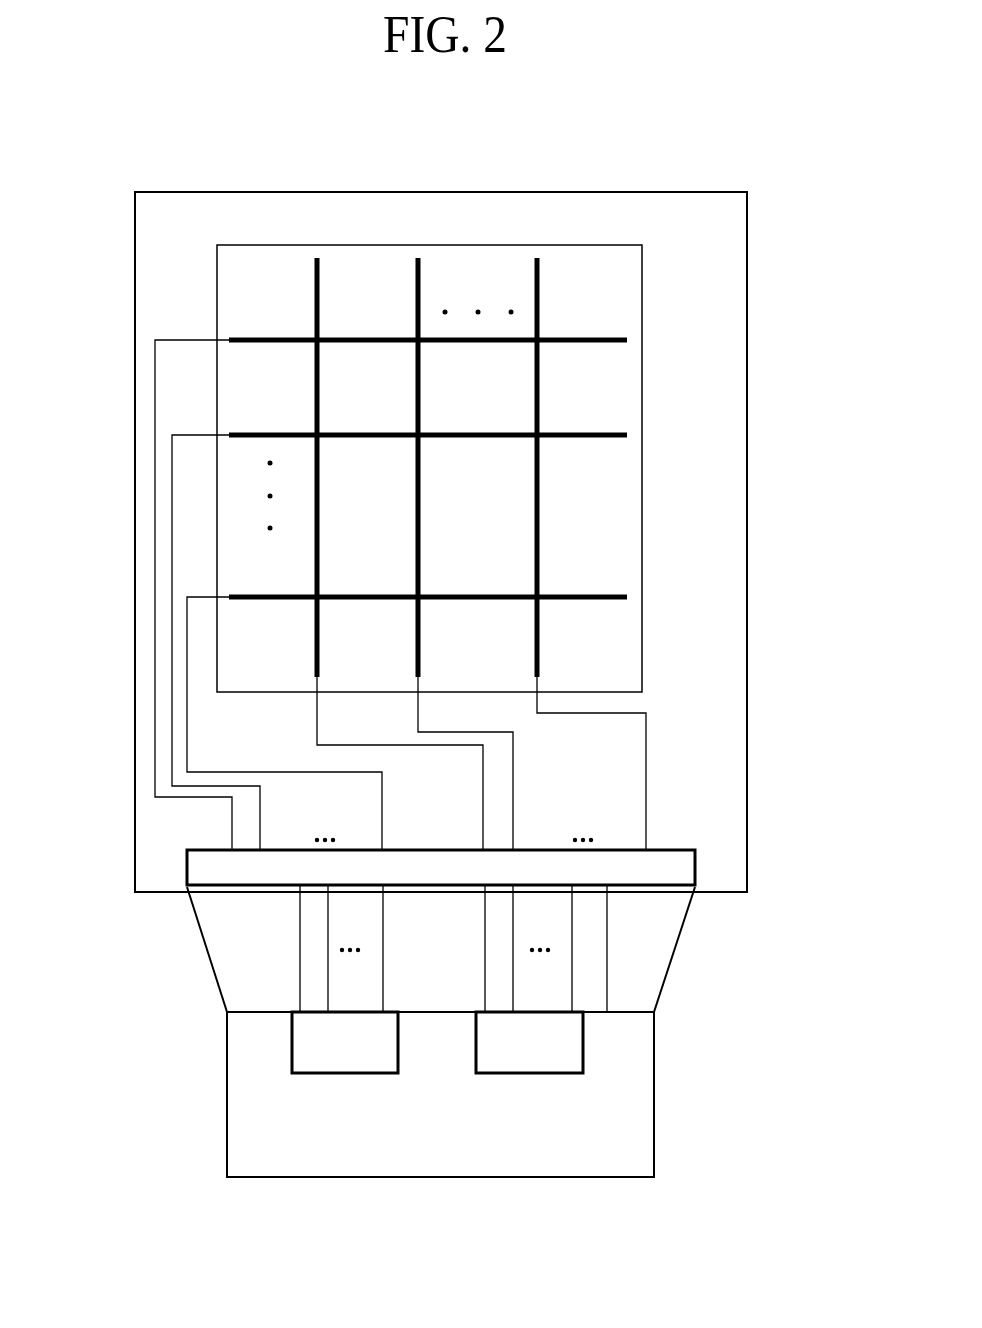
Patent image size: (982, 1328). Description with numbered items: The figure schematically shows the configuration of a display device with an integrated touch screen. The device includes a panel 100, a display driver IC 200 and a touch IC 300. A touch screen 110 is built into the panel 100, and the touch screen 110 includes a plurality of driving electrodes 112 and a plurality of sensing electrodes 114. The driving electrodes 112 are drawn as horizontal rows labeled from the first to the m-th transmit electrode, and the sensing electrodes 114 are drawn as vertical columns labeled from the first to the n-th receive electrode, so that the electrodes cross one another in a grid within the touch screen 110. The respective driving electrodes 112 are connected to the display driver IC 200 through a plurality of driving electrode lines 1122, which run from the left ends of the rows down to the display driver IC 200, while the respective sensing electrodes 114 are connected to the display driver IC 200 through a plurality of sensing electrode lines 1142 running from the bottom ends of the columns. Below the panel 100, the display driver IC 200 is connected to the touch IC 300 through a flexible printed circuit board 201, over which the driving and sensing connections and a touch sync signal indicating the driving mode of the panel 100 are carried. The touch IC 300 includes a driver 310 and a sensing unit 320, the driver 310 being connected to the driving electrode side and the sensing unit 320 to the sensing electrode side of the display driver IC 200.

The panel 100 is at (747, 265).
The touch screen 110 is at (592, 245).
The driving electrodes 112 is at (600, 337).
The sensing electrodes 114 is at (320, 285).
The driving electrode lines 1122 is at (155, 412).
The sensing electrode lines 1142 is at (646, 757).
The display driver IC 200 is at (697, 868).
The flexible printed circuit board 201 is at (680, 940).
The touch IC 300 is at (654, 1075).
The driver 310 is at (348, 1073).
The sensing unit 320 is at (533, 1073).